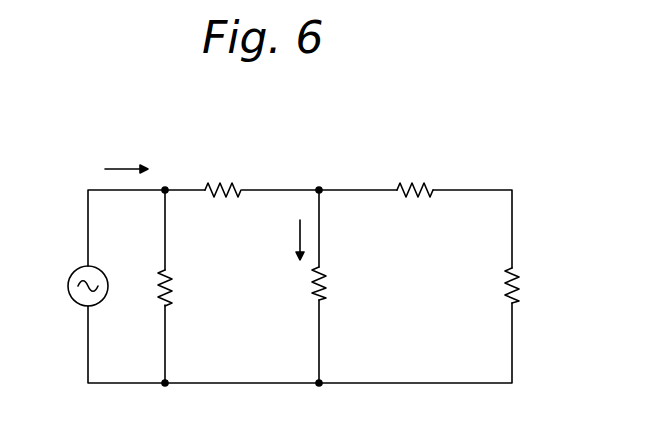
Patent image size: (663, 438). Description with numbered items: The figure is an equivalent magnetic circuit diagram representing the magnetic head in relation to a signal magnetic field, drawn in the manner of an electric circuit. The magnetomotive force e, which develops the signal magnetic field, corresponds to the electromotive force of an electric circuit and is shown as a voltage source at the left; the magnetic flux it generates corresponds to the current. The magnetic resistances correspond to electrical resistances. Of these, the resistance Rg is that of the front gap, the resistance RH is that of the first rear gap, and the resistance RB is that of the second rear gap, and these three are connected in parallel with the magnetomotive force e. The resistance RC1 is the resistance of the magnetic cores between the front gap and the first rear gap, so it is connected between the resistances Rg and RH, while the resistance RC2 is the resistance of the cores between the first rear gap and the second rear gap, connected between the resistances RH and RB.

The magnetomotive force e is at (76, 286).
The magnetic resistance of cores between front gap and first rear gap RC1 is at (233, 172).
The magnetic resistance of cores between first rear gap and second rear gap RC2 is at (413, 171).
The magnetic resistance of front gap Rg is at (187, 288).
The magnetic resistance of first rear gap RH is at (344, 286).
The magnetic resistance of second rear gap RB is at (534, 287).